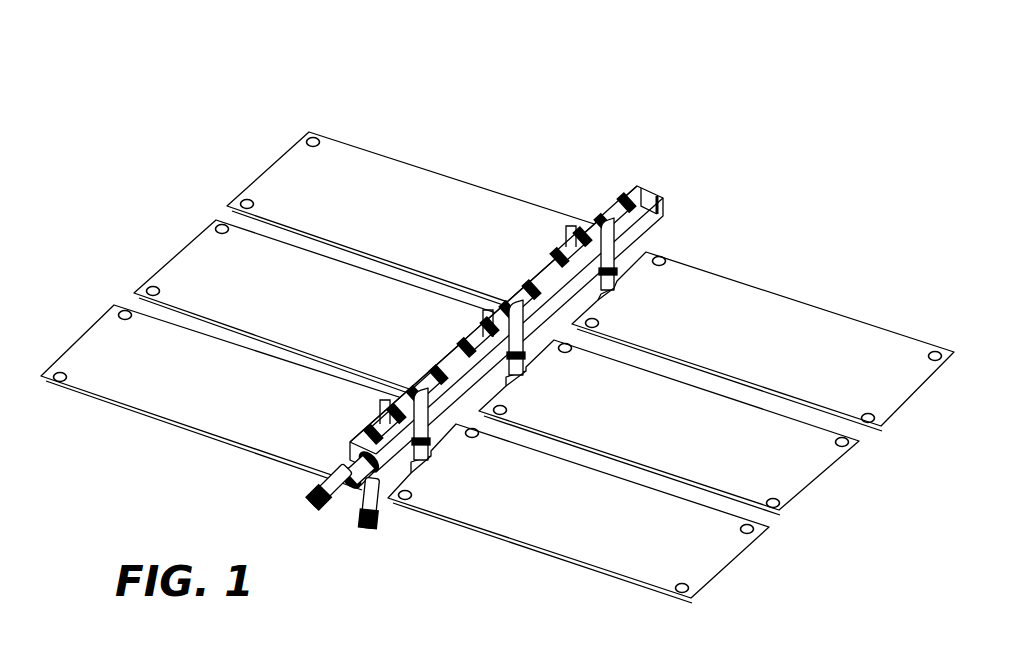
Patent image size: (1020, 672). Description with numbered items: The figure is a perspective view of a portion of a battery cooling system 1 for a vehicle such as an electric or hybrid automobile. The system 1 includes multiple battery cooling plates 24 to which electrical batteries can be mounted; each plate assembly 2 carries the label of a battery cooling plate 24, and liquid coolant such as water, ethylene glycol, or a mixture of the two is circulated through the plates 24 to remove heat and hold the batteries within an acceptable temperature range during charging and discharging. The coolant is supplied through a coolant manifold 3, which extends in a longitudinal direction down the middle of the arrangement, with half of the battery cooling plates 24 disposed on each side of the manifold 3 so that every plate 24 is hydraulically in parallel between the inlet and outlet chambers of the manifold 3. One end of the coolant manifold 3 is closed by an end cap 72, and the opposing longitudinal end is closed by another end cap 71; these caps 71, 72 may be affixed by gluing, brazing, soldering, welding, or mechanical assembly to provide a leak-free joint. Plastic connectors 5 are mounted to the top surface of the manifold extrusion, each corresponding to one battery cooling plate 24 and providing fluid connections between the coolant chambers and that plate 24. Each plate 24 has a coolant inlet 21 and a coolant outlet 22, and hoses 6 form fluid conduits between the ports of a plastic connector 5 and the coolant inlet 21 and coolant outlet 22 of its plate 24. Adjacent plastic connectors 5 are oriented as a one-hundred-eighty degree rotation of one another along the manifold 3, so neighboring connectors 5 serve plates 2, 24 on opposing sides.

The battery cooling system 1 is at (525, 160).
The cooling plate 2 is at (327, 160).
The coolant manifold 3 is at (637, 230).
The plastic connector 5 is at (557, 248).
The hose 6 is at (617, 267).
The coolant inlet 21 is at (615, 280).
The coolant outlet 22 is at (607, 292).
The battery cooling plate 24 is at (482, 355).
The end cap 71 is at (660, 188).
The end cap 72 is at (338, 490).